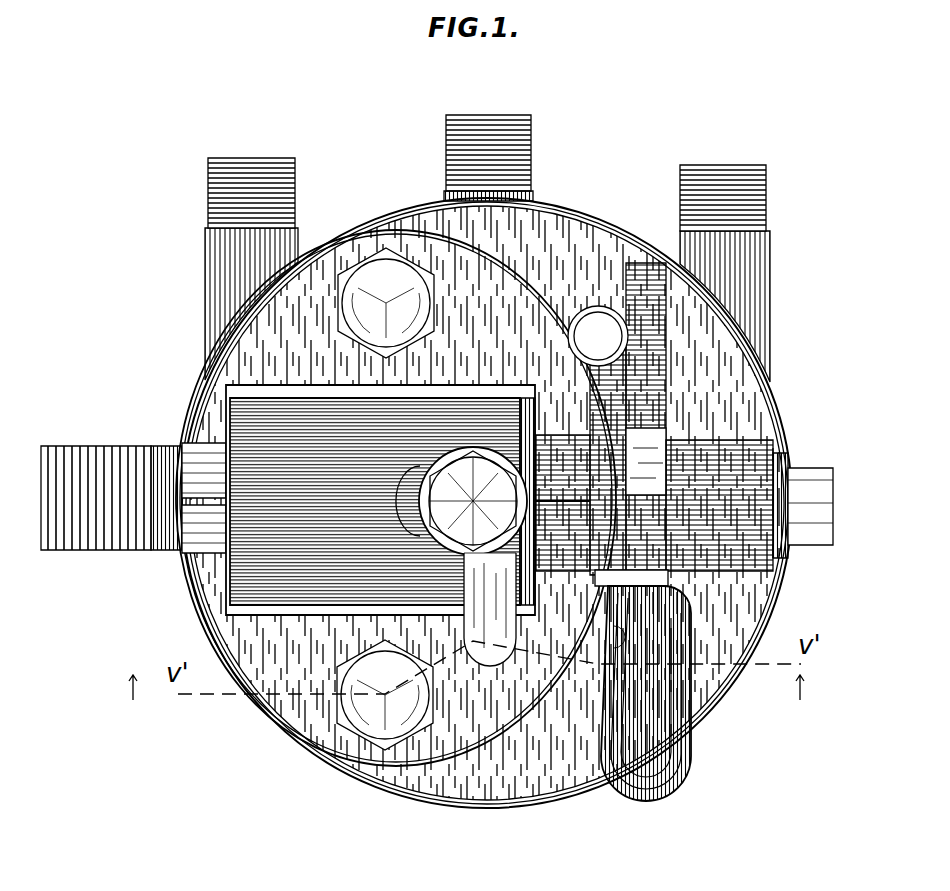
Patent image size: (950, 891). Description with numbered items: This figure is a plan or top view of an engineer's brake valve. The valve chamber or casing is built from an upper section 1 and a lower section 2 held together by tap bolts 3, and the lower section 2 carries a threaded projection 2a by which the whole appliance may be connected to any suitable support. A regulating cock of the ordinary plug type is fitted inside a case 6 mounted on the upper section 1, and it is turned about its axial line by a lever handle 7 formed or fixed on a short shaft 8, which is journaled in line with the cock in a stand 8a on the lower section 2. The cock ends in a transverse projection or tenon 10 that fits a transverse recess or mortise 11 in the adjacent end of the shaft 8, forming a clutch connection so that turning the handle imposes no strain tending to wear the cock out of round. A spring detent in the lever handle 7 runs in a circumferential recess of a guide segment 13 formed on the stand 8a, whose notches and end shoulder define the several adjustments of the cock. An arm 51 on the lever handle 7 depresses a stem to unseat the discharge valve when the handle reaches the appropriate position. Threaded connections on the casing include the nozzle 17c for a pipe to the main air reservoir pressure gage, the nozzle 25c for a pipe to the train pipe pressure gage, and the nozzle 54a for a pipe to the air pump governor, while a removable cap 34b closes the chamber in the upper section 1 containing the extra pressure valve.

The upper section 1 is at (487, 503).
The lower section 2 is at (396, 498).
The threaded projection 2a is at (133, 480).
The tap bolts 3 is at (385, 499).
The case 6 is at (380, 500).
The lever handle 7 is at (643, 685).
The short shaft 8 is at (826, 478).
The stand 8a is at (719, 505).
The transverse projection or tenon 10 is at (563, 503).
The transverse recess or mortise 11 is at (615, 450).
The guide segment 13 is at (668, 419).
The nozzle or threaded connection 17c is at (512, 158).
The nozzle or threaded connection 25c is at (221, 269).
The removable cap 34b is at (448, 466).
The arm 51 is at (598, 346).
The nozzle or threaded connection 54a is at (752, 273).